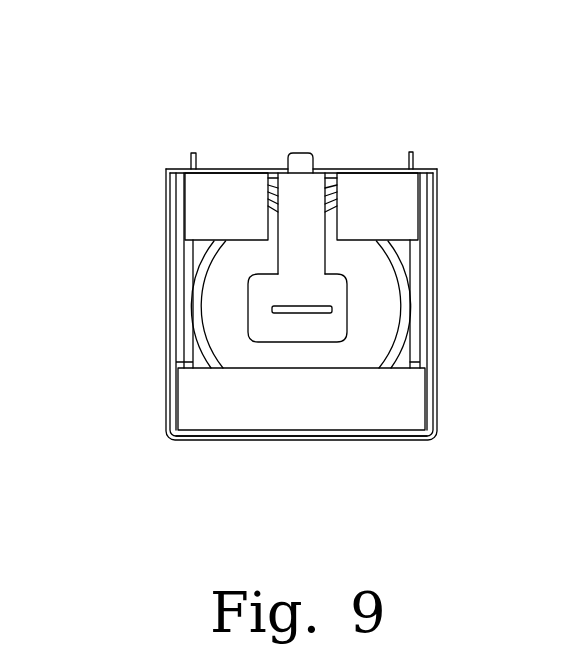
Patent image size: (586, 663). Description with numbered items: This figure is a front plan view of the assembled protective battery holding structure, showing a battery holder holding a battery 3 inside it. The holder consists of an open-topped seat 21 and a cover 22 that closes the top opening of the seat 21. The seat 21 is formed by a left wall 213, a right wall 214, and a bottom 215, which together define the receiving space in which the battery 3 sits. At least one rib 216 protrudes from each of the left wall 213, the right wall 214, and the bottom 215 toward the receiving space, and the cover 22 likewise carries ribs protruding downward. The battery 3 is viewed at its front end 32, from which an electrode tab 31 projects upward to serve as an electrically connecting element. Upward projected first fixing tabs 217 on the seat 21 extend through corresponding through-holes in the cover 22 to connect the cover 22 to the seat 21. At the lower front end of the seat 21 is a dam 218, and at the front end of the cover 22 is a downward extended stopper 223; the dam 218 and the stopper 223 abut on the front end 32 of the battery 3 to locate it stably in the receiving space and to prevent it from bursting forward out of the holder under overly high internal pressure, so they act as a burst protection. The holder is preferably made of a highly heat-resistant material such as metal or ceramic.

The battery 3 is at (220, 303).
The seat 21 is at (443, 454).
The cover 22 is at (213, 156).
The electrode tab 31 is at (302, 152).
The front end 32 is at (240, 267).
The left wall 213 is at (166, 353).
The right wall 214 is at (437, 337).
The bottom 215 is at (207, 441).
The rib 216 is at (413, 278).
The first fixing tab 217 is at (411, 151).
The dam 218 is at (312, 413).
The stopper 223 is at (360, 192).